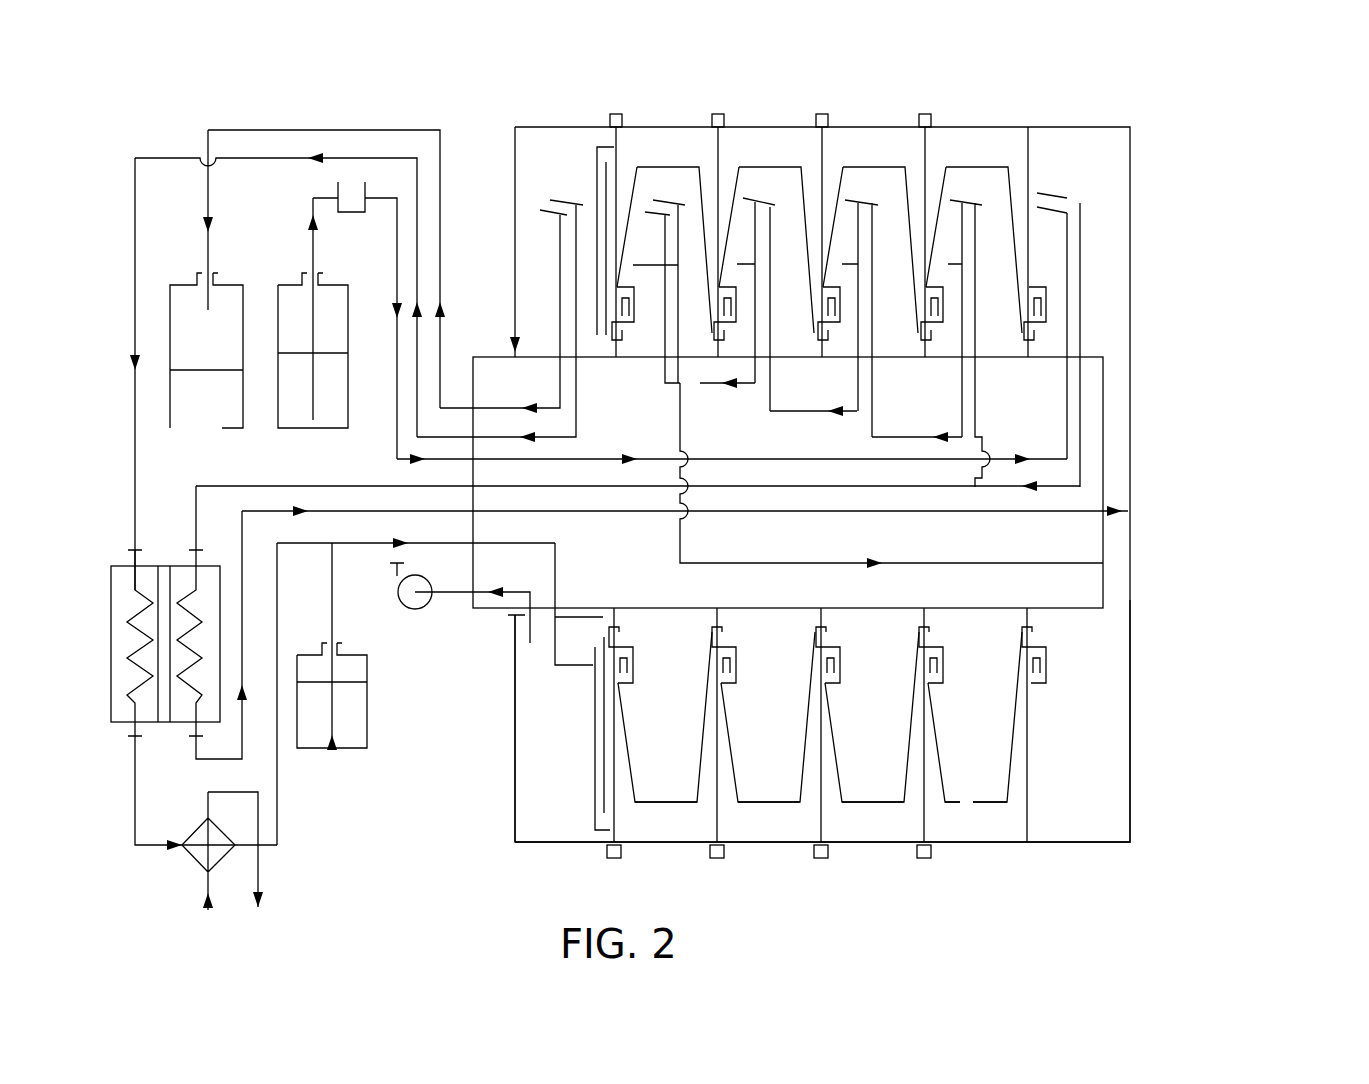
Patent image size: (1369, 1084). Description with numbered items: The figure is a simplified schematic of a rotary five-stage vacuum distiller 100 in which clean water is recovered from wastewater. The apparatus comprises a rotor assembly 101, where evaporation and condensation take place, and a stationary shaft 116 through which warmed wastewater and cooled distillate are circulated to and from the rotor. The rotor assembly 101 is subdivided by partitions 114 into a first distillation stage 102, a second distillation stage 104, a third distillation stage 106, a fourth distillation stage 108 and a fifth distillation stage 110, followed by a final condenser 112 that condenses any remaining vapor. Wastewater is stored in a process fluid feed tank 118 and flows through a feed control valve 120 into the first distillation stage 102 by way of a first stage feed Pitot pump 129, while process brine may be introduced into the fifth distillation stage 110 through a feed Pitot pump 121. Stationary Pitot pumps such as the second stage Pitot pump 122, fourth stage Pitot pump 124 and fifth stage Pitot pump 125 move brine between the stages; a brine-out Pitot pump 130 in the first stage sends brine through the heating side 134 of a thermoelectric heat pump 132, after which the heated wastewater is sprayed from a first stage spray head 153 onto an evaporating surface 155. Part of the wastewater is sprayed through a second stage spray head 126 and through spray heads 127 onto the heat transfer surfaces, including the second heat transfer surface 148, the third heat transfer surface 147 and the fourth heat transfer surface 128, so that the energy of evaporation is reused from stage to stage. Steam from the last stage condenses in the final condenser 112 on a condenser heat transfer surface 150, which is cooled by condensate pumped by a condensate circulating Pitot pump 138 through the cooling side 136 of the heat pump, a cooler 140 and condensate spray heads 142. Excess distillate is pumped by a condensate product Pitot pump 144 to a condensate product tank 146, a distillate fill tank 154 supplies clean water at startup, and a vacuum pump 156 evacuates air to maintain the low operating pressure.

The rotary five-stage vacuum distiller 100 is at (1252, 207).
The rotor assembly 101 is at (1150, 591).
The first distillation stage 102 is at (1083, 772).
The second distillation stage 104 is at (990, 772).
The third distillation stage 106 is at (885, 772).
The fourth distillation stage 108 is at (782, 772).
The fifth distillation stage 110 is at (680, 772).
The final condenser 112 is at (575, 772).
The partitions 114 is at (615, 808).
The stationary shaft 116 is at (1078, 608).
The process fluid feed tank 118 is at (292, 292).
The feed control valve 120 is at (352, 190).
The feed Pitot pump 121 is at (652, 198).
The second stage Pitot pump 122 is at (860, 200).
The fourth stage Pitot pump 124 is at (758, 198).
The fifth stage Pitot pump 125 is at (673, 205).
The second stage spray head 126 is at (950, 264).
The spray heads 127 is at (650, 265).
The fourth heat transfer surface 128 is at (678, 167).
The first stage feed Pitot pump 129 is at (1085, 135).
The brine-out Pitot pump 130 is at (1053, 195).
The thermoelectric heat pump 132 is at (117, 727).
The heating side 134 is at (170, 673).
The cooling side 136 is at (130, 620).
The condensate circulating Pitot pump 138 is at (567, 200).
The cooler 140 is at (195, 855).
The condensate spray heads 142 is at (580, 618).
The condensate product Pitot pump 144 is at (957, 167).
The condensate product tank 146 is at (187, 295).
The third heat transfer surface 147 is at (752, 167).
The second heat transfer surface 148 is at (852, 167).
The condenser heat transfer surface 150 is at (597, 797).
The first stage spray head 153 is at (1128, 512).
The distillate fill tank 154 is at (308, 748).
The evaporating surface 155 is at (1131, 445).
The vacuum pump 156 is at (415, 610).